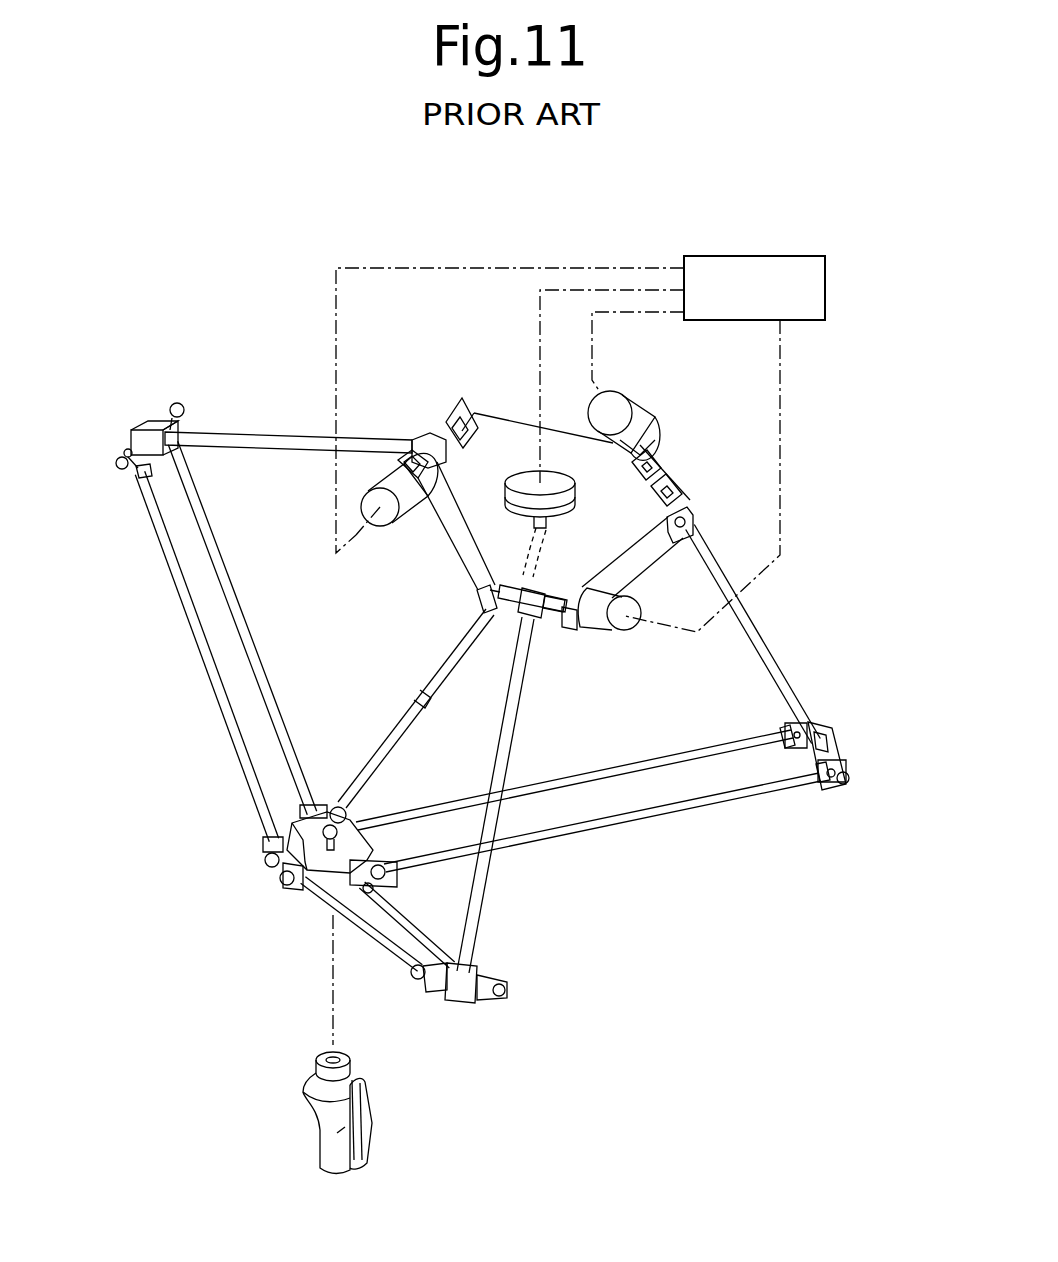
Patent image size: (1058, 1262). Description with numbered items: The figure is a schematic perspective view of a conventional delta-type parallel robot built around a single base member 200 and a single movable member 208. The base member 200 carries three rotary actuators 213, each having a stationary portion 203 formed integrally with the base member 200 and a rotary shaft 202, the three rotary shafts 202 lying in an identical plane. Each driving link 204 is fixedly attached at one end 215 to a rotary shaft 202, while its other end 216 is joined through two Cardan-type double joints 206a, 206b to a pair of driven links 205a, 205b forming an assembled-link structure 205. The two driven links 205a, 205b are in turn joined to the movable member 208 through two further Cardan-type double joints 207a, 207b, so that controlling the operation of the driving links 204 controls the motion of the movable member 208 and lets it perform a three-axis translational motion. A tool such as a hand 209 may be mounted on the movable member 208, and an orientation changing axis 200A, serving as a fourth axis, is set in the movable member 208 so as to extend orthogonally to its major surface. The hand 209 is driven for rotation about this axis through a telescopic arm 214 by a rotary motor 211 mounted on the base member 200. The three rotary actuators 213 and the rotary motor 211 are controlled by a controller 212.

The base member 200 is at (510, 433).
The orientation changing axis 200A is at (333, 980).
The rotary shaft 202 is at (645, 448).
The stationary portion 203 is at (620, 410).
The driving link 204 is at (765, 648).
The driven link 205 is at (660, 823).
The driven link 205a is at (605, 830).
The driven link 205b is at (575, 765).
The Cardan-type double joint 206a is at (828, 787).
The Cardan-type double joint 206b is at (785, 730).
The Cardan-type double joint 207a is at (393, 872).
The Cardan-type double joint 207b is at (360, 820).
The movable member 208 is at (300, 835).
The hand 209 is at (330, 1140).
The rotary motor 211 is at (520, 510).
The controller 212 is at (742, 262).
The rotary actuator 213 is at (433, 422).
The telescopic arm 214 is at (410, 725).
The one end of driving link 215 is at (655, 478).
The other end of driving link 216 is at (835, 745).